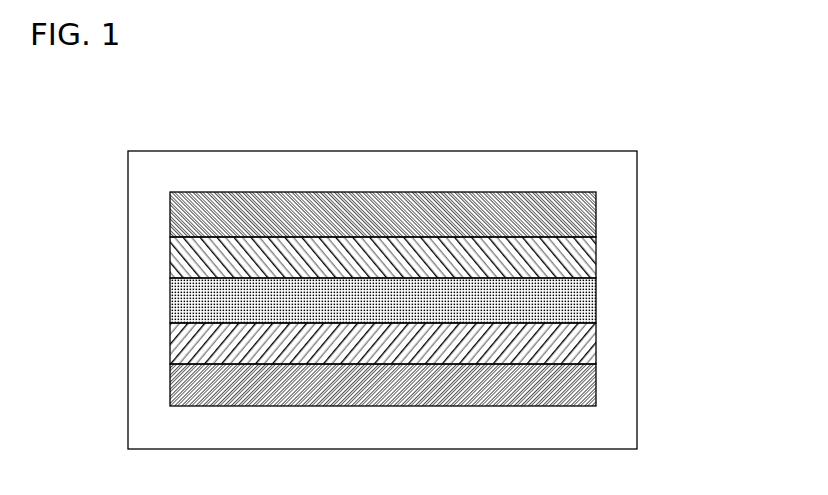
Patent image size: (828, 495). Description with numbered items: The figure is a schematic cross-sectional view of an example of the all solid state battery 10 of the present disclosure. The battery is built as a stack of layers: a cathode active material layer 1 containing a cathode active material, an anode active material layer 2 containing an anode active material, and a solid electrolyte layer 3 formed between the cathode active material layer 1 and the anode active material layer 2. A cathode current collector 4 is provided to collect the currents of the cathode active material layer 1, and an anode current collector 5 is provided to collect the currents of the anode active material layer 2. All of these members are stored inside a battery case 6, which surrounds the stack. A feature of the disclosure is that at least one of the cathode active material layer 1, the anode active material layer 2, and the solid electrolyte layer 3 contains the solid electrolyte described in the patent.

The all solid state battery 10 is at (623, 109).
The battery case 6 is at (615, 166).
The cathode current collector 4 is at (596, 207).
The cathode active material layer 1 is at (596, 248).
The solid electrolyte layer 3 is at (596, 290).
The anode active material layer 2 is at (596, 333).
The anode current collector 5 is at (596, 374).